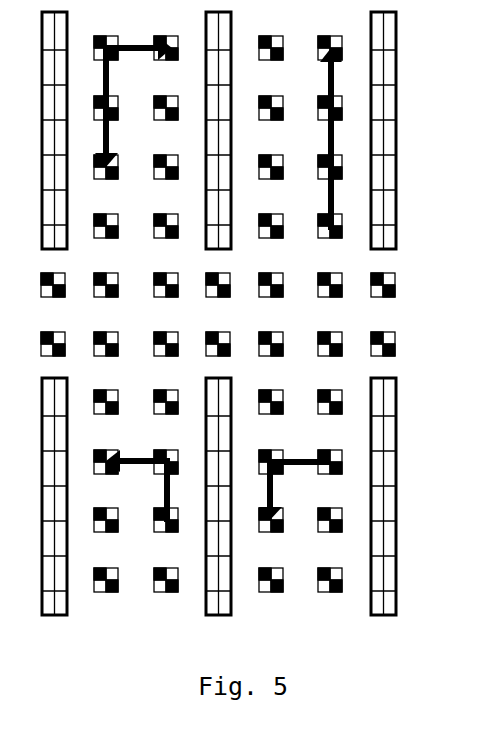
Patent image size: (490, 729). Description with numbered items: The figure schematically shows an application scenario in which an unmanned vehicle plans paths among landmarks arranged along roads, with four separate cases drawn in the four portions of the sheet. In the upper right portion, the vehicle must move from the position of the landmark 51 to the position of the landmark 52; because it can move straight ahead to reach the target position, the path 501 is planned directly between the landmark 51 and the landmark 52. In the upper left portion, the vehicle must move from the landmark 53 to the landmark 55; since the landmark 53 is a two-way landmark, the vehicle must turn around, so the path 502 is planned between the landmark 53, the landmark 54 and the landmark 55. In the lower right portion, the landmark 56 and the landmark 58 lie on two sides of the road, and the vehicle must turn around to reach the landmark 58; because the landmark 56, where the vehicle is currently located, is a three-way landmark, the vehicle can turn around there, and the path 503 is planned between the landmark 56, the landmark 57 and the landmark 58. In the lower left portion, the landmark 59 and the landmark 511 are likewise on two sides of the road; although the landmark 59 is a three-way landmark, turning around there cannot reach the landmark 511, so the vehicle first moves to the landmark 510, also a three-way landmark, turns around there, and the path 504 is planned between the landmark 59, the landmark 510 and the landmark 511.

The landmark 51 is at (317, 225).
The landmark 52 is at (315, 47).
The landmark 53 is at (167, 30).
The landmark 54 is at (106, 33).
The landmark 55 is at (120, 167).
The landmark 56 is at (337, 449).
The landmark 57 is at (260, 455).
The landmark 58 is at (258, 523).
The landmark 59 is at (171, 535).
The landmark 510 is at (170, 449).
The landmark 511 is at (102, 449).
The path 501 is at (308, 139).
The path 502 is at (133, 102).
The path 503 is at (294, 491).
The path 504 is at (136, 486).